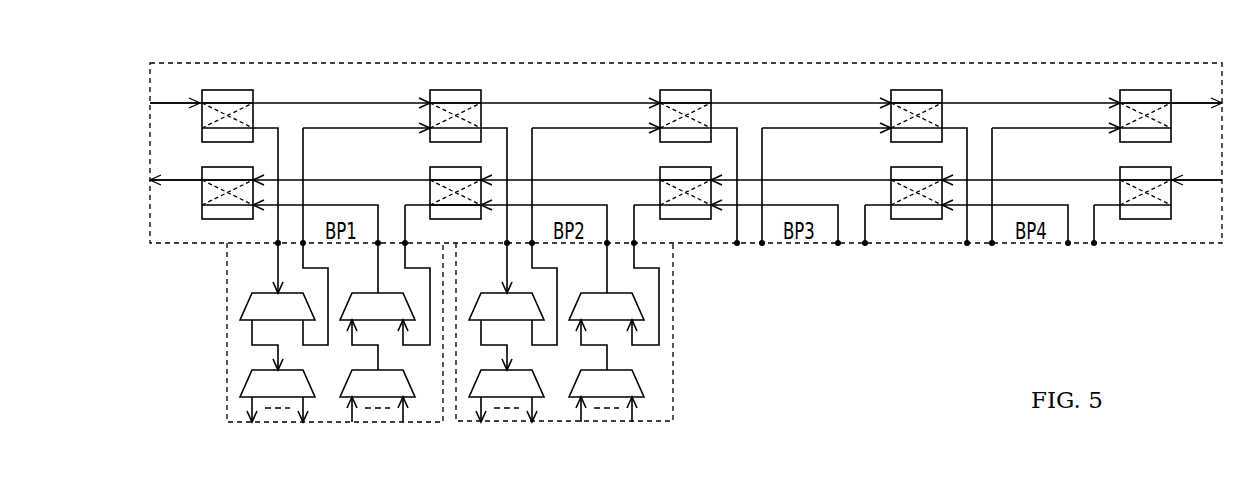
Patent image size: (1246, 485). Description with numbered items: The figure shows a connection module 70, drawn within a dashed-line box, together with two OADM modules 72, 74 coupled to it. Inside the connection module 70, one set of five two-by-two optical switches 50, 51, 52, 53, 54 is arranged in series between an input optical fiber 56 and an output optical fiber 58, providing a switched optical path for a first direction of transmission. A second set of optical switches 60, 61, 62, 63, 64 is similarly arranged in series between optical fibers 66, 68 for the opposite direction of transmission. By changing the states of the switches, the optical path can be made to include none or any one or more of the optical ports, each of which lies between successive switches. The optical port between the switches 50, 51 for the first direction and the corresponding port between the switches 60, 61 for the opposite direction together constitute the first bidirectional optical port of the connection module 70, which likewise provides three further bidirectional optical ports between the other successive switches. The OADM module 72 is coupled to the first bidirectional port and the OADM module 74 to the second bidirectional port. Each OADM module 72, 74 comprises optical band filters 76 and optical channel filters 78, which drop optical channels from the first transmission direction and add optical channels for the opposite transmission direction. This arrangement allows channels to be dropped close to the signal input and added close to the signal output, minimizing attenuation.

The 2×2 optical switch 50 is at (228, 98).
The 2×2 optical switch 51 is at (457, 95).
The 2×2 optical switch 52 is at (687, 93).
The 2×2 optical switch 53 is at (917, 93).
The 2×2 optical switch 54 is at (1147, 93).
The input optical fiber 56 is at (170, 102).
The output optical fiber 58 is at (1198, 100).
The optical switch 60 is at (217, 173).
The optical switch 61 is at (445, 172).
The optical switch 62 is at (693, 212).
The optical switch 63 is at (917, 212).
The optical switch 64 is at (1145, 212).
The optical fiber 66 is at (180, 180).
The optical fiber 68 is at (1213, 183).
The connection module 70 is at (783, 72).
The OADM module 72 is at (232, 368).
The OADM module 74 is at (668, 365).
The optical band filter 76 is at (253, 303).
The optical channel filter 78 is at (253, 382).